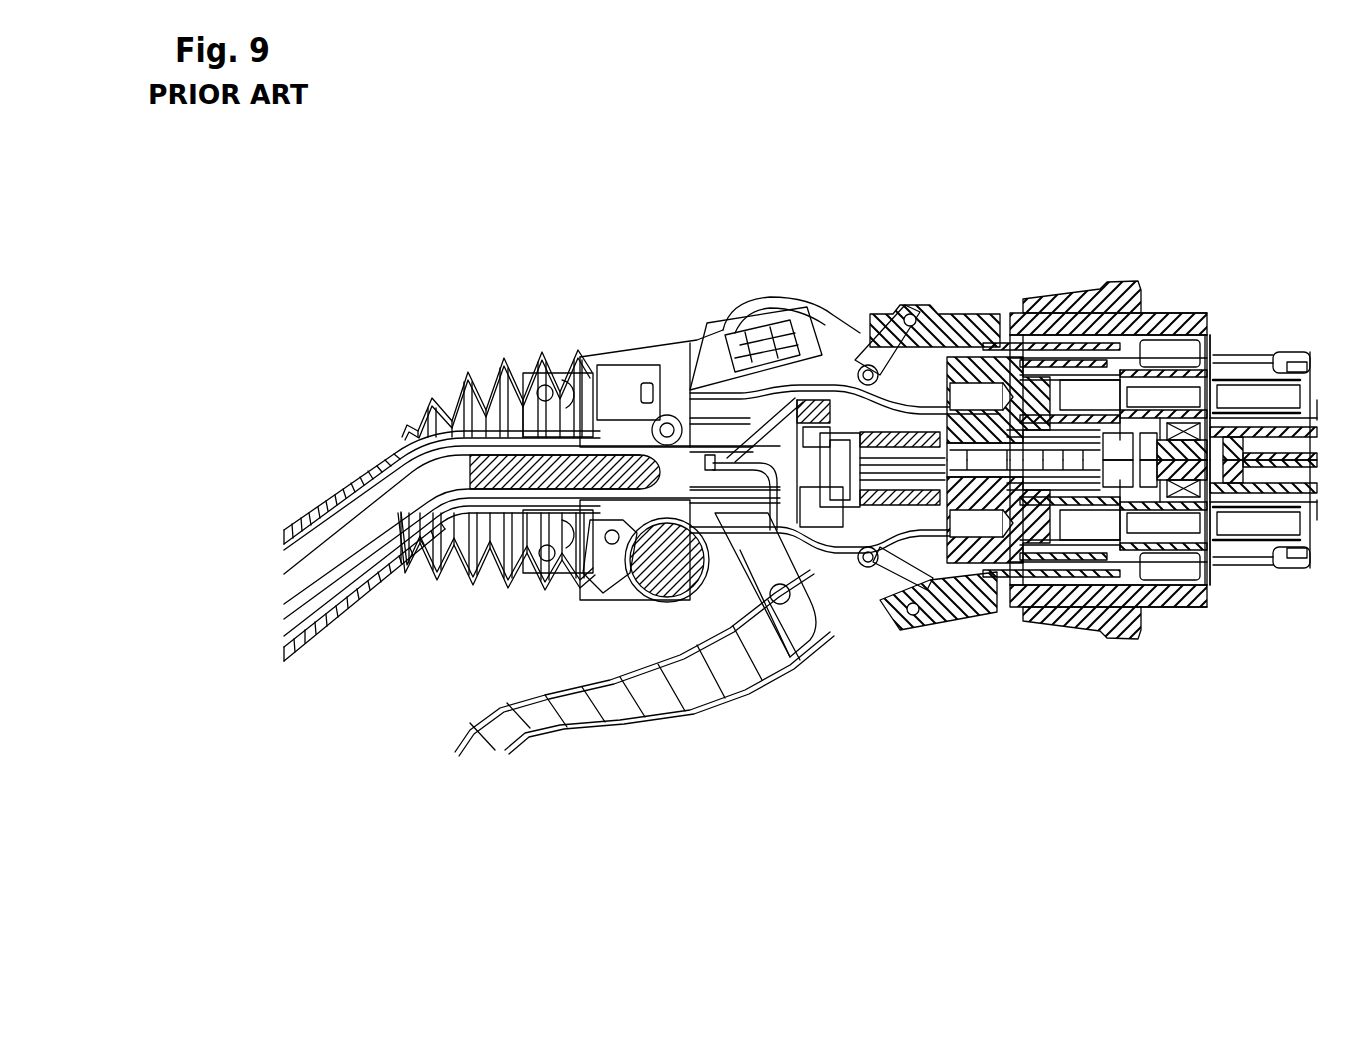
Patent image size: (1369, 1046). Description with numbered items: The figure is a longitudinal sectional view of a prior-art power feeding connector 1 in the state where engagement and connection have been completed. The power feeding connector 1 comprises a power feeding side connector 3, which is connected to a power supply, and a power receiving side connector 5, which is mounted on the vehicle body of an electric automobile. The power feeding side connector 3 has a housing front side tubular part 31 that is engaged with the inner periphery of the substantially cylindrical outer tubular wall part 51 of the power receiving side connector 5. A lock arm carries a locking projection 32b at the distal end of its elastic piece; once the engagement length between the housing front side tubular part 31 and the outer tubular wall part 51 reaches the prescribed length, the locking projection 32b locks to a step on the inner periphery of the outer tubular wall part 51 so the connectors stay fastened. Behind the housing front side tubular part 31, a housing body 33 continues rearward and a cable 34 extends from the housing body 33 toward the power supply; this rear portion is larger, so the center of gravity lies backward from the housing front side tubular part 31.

The power feeding connector 1 is at (1003, 155).
The power feeding side connector 3 is at (932, 305).
The power receiving side connector 5 is at (1043, 305).
The housing front side tubular part 31 is at (1103, 287).
The locking projection 32b is at (1053, 300).
The housing body 33 is at (643, 335).
The cable 34 is at (323, 502).
The outer tubular wall part 51 is at (1153, 307).